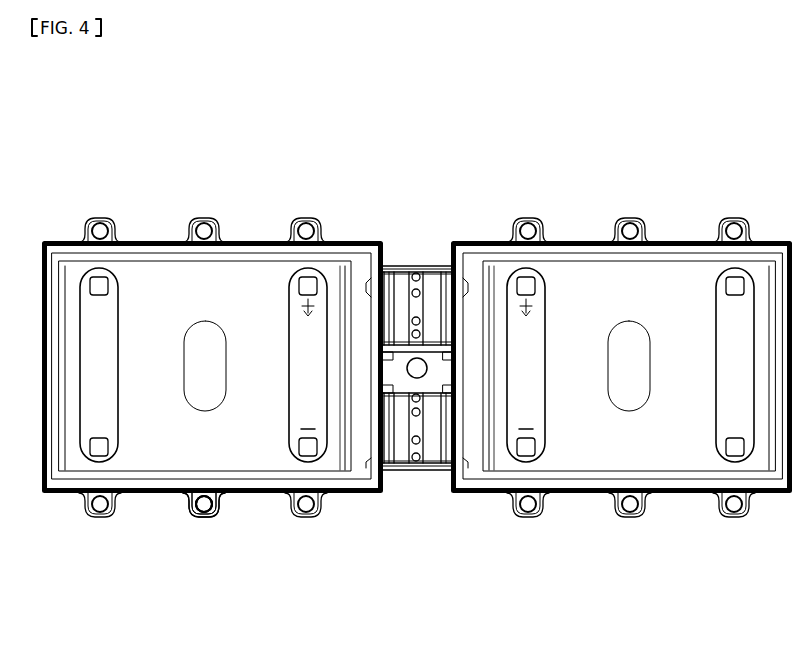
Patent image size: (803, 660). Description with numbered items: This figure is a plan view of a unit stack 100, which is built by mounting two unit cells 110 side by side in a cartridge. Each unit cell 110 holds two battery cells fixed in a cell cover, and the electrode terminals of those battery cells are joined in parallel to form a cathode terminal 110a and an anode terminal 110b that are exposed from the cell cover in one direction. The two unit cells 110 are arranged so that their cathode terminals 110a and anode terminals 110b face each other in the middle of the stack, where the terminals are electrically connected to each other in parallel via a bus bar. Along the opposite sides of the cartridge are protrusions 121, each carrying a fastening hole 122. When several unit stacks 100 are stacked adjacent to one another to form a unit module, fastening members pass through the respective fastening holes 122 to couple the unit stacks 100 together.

The unit stack 100 is at (104, 131).
The unit cell 110 is at (148, 290).
The cathode terminal 110a is at (437, 290).
The anode terminal 110b is at (437, 443).
The protrusion 121 is at (193, 512).
The fastening hole 122 is at (212, 504).